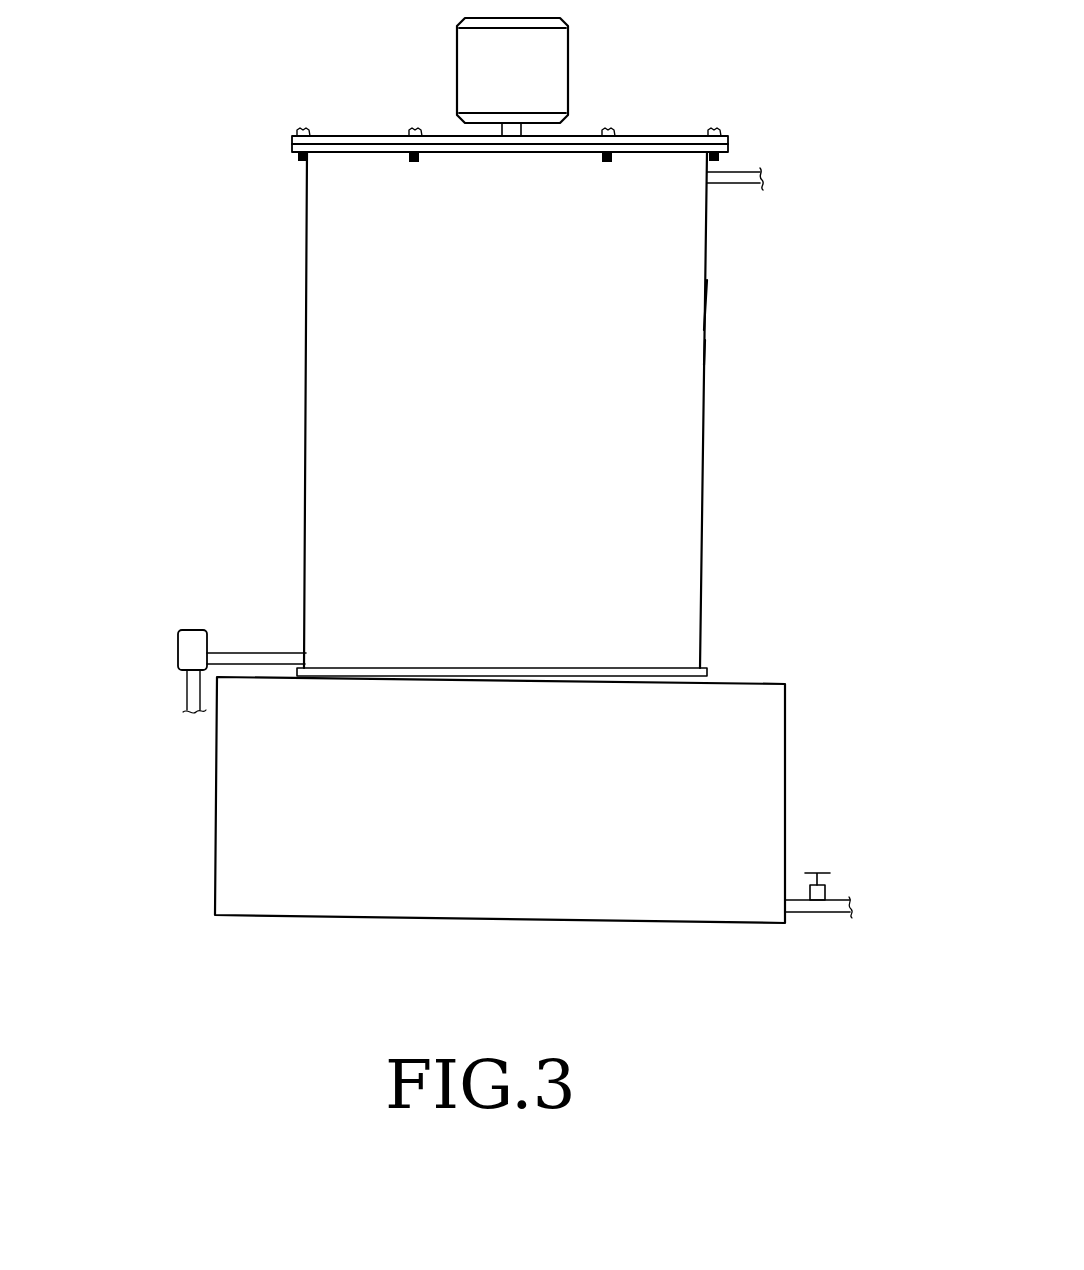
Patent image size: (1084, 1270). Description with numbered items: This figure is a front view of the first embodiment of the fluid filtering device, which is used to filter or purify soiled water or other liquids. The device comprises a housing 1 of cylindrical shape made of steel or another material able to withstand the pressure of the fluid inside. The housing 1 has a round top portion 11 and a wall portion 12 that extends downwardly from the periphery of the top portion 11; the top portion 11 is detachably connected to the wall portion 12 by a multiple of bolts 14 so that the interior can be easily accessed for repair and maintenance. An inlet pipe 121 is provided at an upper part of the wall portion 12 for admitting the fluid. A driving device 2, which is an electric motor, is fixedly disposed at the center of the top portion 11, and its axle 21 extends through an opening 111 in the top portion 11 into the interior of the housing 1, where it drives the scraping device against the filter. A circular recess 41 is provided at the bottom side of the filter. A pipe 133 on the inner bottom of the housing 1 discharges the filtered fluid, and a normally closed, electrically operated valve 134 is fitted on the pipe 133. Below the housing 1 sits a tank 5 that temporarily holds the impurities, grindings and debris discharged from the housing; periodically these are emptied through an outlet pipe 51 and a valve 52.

The housing 1 is at (712, 491).
The top portion 11 is at (345, 136).
The opening 111 is at (500, 135).
The wall portion 12 is at (707, 303).
The inlet pipe 121 is at (735, 183).
The pipe 133 is at (255, 653).
The valve 134 is at (185, 648).
The bolts 14 is at (720, 136).
The driving device 2 is at (580, 56).
The axle 21 is at (521, 134).
The circular recess 41 is at (709, 352).
The tank 5 is at (808, 738).
The outlet pipe 51 is at (846, 902).
The valve 52 is at (826, 888).